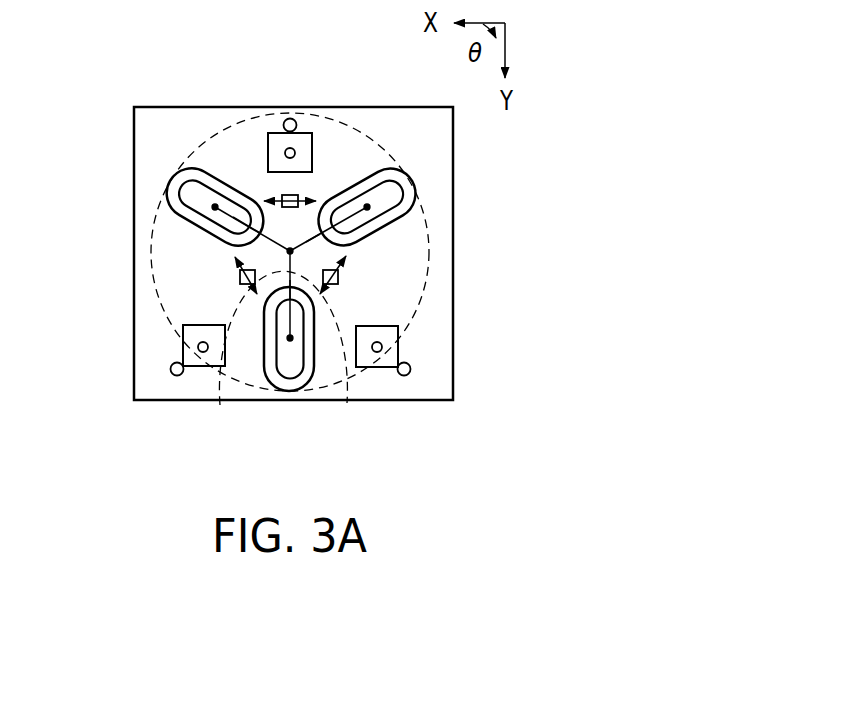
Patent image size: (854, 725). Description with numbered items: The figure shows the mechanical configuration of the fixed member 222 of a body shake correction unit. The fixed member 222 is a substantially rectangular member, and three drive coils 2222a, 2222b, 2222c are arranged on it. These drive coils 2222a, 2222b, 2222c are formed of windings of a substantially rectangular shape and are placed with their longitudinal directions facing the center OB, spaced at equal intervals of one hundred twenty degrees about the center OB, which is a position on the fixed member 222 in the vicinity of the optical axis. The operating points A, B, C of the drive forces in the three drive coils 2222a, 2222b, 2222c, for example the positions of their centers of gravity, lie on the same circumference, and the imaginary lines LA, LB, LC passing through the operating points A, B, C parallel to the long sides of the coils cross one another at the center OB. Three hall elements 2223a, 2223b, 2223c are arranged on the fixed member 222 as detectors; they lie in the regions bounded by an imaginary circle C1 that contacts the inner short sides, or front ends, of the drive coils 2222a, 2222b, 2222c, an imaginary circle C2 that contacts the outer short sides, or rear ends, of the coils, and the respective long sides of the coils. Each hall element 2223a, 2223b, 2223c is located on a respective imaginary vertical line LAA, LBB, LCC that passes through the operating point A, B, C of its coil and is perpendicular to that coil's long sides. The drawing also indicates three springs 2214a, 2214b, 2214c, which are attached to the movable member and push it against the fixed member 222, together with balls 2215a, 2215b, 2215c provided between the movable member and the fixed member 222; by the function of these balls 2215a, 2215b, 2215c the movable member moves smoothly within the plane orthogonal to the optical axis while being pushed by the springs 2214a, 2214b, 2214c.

The fixed member 222 is at (463, 335).
The spring 2214a is at (170, 369).
The spring 2214b is at (289, 118).
The spring 2214c is at (409, 372).
The ball 2215a is at (200, 352).
The ball 2215b is at (285, 149).
The ball 2215c is at (383, 348).
The drive coil 2222a is at (175, 170).
The drive coil 2222b is at (405, 225).
The drive coil 2222c is at (310, 392).
The hall element 2223a is at (338, 277).
The hall element 2223b is at (240, 280).
The hall element 2223c is at (298, 196).
The operating point A is at (210, 206).
The operating point B is at (371, 207).
The operating point C is at (287, 341).
The imaginary line LA is at (218, 204).
The imaginary line LB is at (371, 203).
The imaginary line LC is at (292, 322).
The imaginary vertical line LAA is at (233, 217).
The imaginary vertical line LBB is at (306, 242).
The imaginary vertical line LCC is at (296, 290).
The center OB is at (240, 276).
The imaginary circle C1 is at (220, 405).
The imaginary circle C2 is at (427, 316).